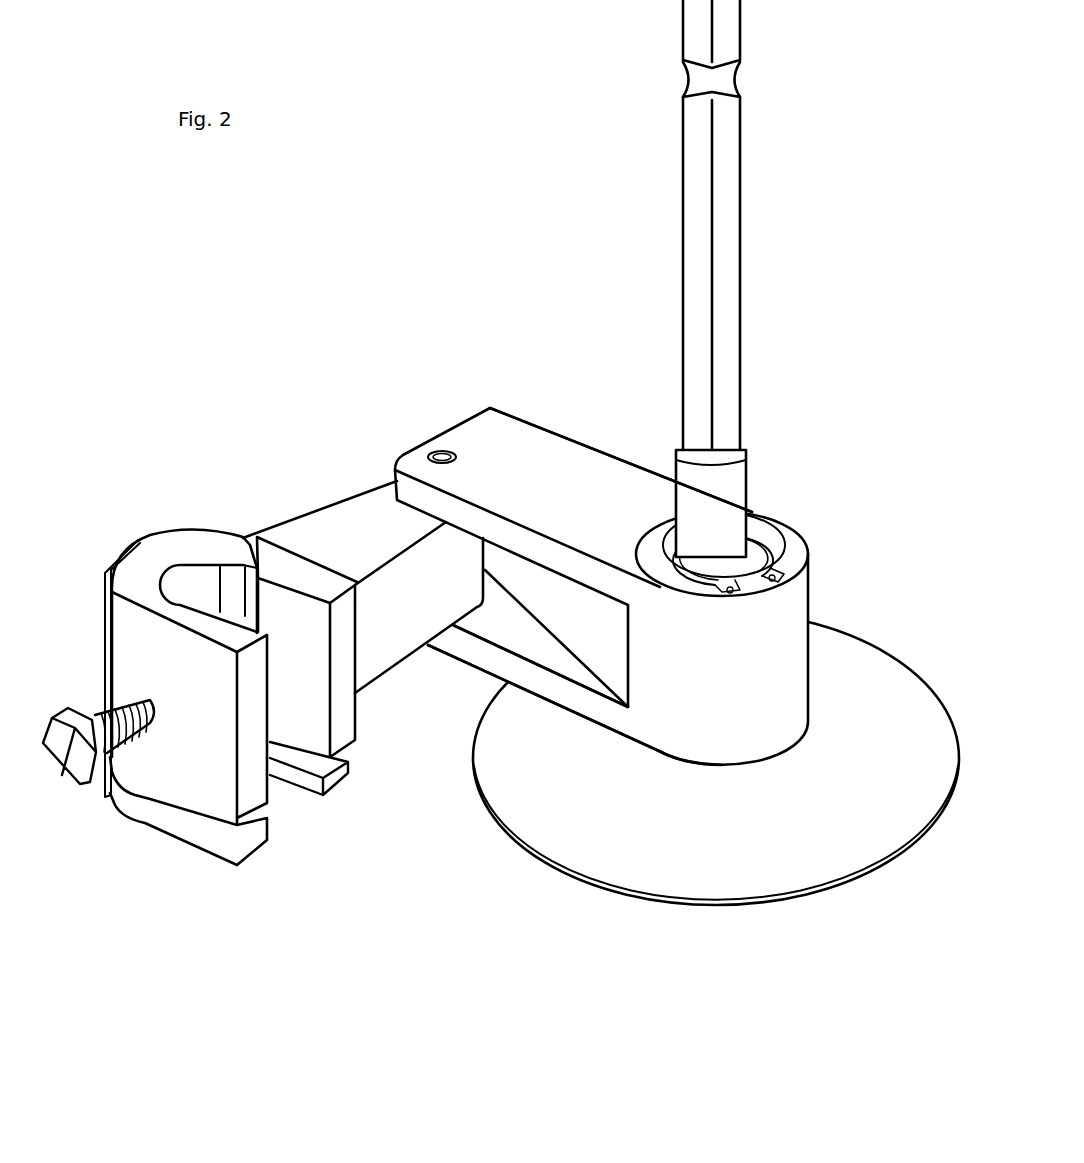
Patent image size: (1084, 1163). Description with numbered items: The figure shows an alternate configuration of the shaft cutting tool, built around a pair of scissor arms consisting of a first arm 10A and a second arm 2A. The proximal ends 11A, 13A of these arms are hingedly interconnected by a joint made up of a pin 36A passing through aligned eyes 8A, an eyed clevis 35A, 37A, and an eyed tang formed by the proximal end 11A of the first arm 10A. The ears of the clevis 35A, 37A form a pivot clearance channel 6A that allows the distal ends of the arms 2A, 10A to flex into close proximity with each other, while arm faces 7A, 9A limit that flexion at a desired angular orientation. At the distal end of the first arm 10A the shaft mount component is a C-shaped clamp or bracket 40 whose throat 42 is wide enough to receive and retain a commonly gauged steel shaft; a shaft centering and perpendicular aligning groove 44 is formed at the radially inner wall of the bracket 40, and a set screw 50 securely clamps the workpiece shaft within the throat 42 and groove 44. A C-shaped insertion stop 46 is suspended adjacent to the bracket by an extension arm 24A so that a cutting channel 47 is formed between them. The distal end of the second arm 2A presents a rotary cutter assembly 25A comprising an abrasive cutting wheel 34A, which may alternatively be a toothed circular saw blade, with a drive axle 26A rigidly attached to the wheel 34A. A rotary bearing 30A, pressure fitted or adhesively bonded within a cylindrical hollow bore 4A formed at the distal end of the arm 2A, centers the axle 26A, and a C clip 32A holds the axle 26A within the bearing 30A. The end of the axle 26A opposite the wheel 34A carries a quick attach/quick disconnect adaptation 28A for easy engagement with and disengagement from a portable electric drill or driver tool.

The second arm 2A is at (525, 440).
The cylindrical hollow bore 4A is at (650, 537).
The pivot clearance channel 6A is at (590, 620).
The arm face 7A is at (518, 630).
The aligned eyes 8A is at (460, 453).
The arm face 9A is at (380, 628).
The first arm 10A is at (352, 528).
The proximal end 11A is at (463, 572).
The proximal end 13A is at (488, 435).
The extension arm 24A is at (105, 655).
The rotary cutter assembly 25A is at (824, 584).
The drive axle 26A is at (740, 382).
The quick attach/quick disconnect adaptation 28A is at (697, 75).
The rotary bearing 30A is at (783, 540).
The C clip 32A is at (762, 545).
The abrasive cutting wheel 34A is at (798, 848).
The eyed clevis 35A is at (417, 463).
The pin 36A is at (437, 453).
The eyed clevis 37A is at (503, 672).
The C clamp or bracket 40 is at (178, 545).
The throat 42 is at (197, 590).
The shaft centering and perpendicular aligning groove 44 is at (238, 583).
The C shaped insertion stop 46 is at (215, 850).
The cutting channel 47 is at (163, 810).
The set screw 50 is at (67, 753).